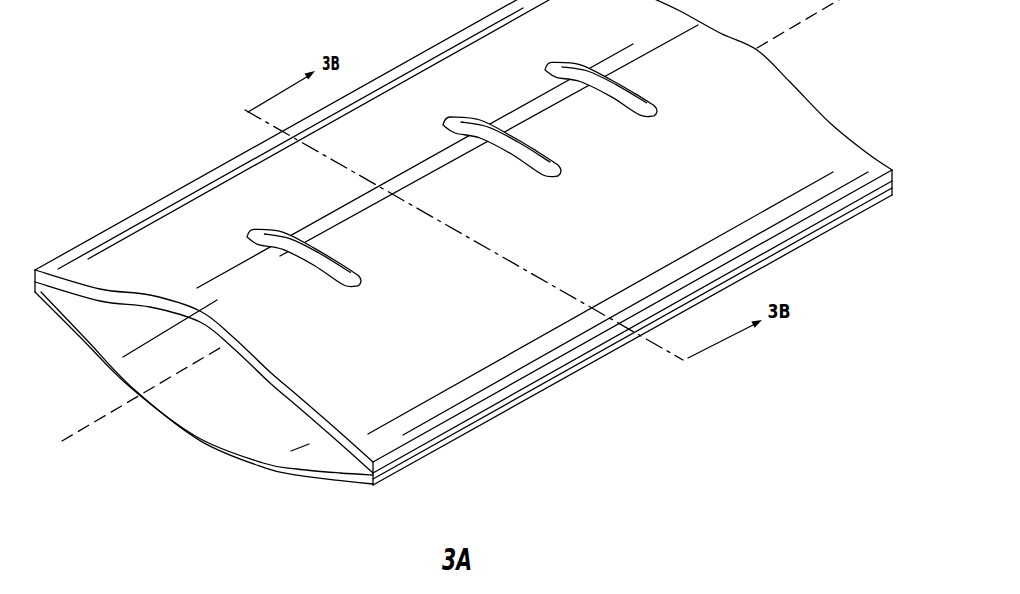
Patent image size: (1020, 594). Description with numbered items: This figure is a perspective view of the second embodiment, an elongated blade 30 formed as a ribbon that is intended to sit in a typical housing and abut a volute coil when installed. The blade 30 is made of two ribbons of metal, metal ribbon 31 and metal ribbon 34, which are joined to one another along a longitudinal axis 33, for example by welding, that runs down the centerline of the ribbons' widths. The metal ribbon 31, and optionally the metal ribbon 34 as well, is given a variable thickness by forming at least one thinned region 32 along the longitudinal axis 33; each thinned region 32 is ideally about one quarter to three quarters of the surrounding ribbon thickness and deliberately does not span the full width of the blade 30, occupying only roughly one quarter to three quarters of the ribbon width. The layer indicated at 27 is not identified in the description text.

The blade 30 is at (135, 58).
The base layer 27 is at (468, 435).
The metal ribbon 31 is at (323, 228).
The thinned region 32 is at (489, 138).
The longitudinal axis 33 is at (439, 231).
The metal ribbon 34 is at (295, 471).